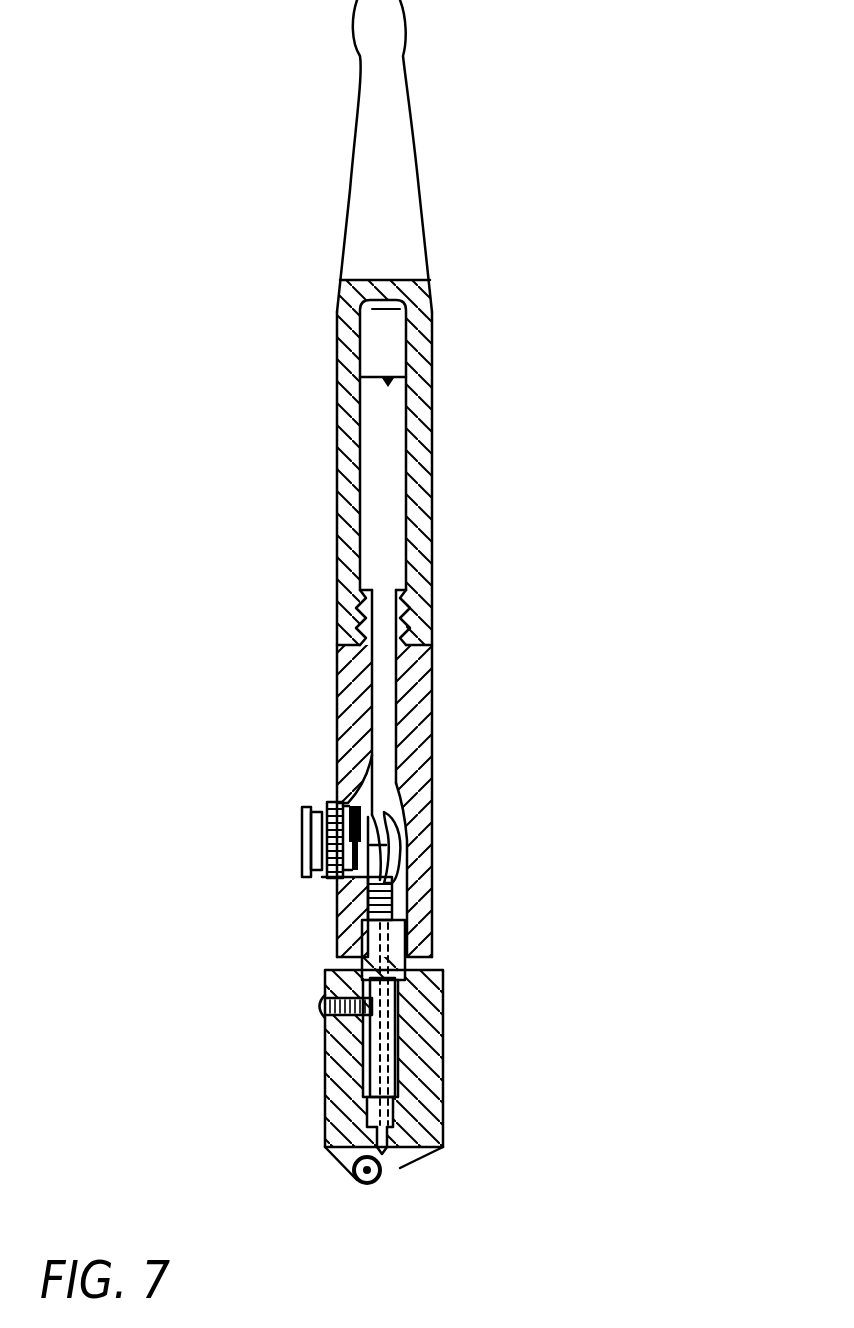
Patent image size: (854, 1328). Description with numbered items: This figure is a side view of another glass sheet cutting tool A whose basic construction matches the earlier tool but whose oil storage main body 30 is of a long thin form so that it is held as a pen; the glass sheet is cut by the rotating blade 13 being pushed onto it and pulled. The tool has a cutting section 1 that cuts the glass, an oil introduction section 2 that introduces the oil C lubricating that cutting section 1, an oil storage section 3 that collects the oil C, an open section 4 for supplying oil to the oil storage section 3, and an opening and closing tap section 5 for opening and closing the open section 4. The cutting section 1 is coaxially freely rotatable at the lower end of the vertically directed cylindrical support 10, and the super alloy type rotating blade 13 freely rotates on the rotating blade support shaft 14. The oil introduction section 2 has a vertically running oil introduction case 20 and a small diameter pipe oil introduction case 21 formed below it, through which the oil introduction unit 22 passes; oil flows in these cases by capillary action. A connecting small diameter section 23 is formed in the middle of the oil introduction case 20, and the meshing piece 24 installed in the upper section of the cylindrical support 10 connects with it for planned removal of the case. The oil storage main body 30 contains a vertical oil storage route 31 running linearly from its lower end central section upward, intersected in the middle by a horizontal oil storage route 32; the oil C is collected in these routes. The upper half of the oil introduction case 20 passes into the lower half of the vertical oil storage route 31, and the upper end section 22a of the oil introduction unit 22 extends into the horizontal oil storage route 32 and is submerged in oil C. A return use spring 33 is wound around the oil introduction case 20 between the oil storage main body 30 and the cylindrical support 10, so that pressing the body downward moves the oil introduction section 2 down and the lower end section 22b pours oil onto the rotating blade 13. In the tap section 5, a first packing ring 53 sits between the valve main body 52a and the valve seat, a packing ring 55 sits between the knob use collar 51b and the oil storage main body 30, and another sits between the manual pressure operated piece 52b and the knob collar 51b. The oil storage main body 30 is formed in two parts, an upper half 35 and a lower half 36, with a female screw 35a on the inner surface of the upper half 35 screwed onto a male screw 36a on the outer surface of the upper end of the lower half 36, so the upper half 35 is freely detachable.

The glass sheet cutting tool A is at (493, 252).
The oil C is at (388, 405).
The cutting section 1 is at (464, 1068).
The oil introduction section 2 is at (433, 903).
The oil storage section 3 is at (480, 656).
The open section 4 is at (338, 890).
The opening and closing tap section 5 is at (270, 853).
The cylindrical support 10 is at (440, 1030).
The rotating blade 13 is at (400, 1177).
The rotating blade support shaft 14 is at (352, 1185).
The oil introduction case 20 is at (372, 1080).
The small diameter pipe oil introduction case 21 is at (418, 1126).
The oil introduction unit 22 is at (395, 885).
The upper end section of the oil introduction unit 22a is at (388, 848).
The lower end section of the oil introduction unit 22b is at (384, 1151).
The connecting small diameter section 23 is at (398, 990).
The meshing piece 24 is at (327, 1040).
The oil storage main body 30 is at (440, 530).
The vertical oil storage route 31 is at (383, 689).
The horizontal oil storage route 32 is at (402, 815).
The return use spring 33 is at (405, 960).
The upper half 35 is at (350, 440).
The female screw 35a is at (358, 600).
The lower half 36 is at (350, 660).
The male screw 36a is at (437, 612).
The knob use collar 51b is at (332, 877).
The valve main body 52a is at (402, 800).
The manual pressure operated piece 52b is at (302, 822).
The first packing ring 53 is at (362, 792).
The packing ring 55 is at (322, 805).